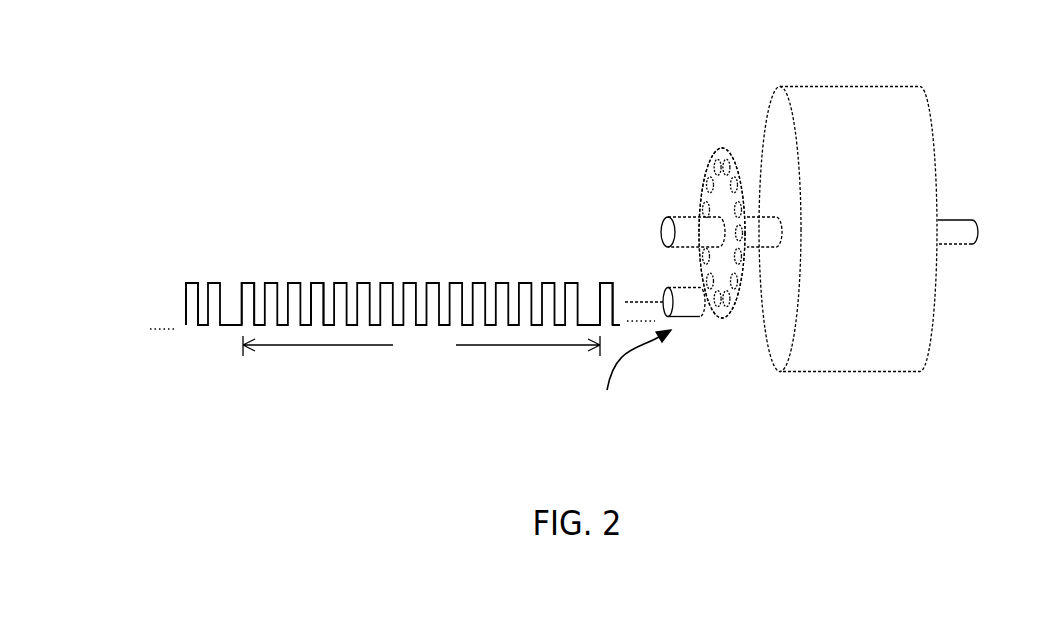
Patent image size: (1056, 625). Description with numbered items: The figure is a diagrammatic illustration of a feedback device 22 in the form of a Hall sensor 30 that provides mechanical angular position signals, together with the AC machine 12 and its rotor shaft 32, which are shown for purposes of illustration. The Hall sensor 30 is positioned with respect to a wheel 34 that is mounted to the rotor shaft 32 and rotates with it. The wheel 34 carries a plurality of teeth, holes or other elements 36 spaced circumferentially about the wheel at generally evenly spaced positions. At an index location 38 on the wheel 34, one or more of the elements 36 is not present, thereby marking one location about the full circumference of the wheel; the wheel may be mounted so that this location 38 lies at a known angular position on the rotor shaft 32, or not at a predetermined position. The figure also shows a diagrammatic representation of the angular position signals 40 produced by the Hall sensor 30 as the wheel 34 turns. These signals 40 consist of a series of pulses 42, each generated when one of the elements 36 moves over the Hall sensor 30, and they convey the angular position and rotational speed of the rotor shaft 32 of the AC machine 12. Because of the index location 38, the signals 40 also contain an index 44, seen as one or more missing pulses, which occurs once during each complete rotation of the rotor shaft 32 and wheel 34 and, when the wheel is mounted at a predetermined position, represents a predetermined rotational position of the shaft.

The AC machine 12 is at (848, 98).
The feedback device 22 is at (633, 376).
The Hall sensor 30 is at (678, 316).
The rotor shaft 32 is at (663, 233).
The wheel 34 is at (705, 187).
The elements 36 is at (703, 183).
The index location 38 is at (733, 300).
The mechanical angular position signals 40 is at (348, 232).
The pulses 42 is at (320, 282).
The index 44 is at (230, 282).